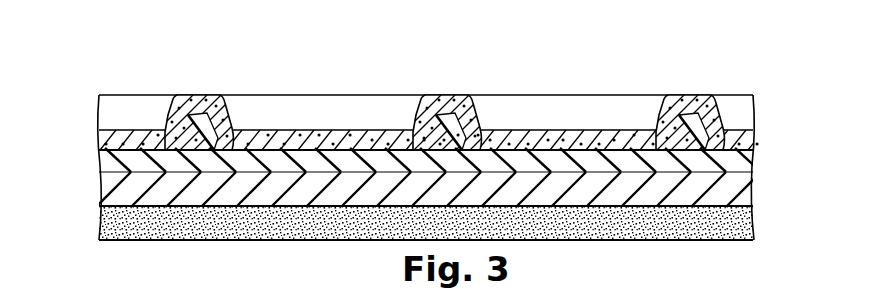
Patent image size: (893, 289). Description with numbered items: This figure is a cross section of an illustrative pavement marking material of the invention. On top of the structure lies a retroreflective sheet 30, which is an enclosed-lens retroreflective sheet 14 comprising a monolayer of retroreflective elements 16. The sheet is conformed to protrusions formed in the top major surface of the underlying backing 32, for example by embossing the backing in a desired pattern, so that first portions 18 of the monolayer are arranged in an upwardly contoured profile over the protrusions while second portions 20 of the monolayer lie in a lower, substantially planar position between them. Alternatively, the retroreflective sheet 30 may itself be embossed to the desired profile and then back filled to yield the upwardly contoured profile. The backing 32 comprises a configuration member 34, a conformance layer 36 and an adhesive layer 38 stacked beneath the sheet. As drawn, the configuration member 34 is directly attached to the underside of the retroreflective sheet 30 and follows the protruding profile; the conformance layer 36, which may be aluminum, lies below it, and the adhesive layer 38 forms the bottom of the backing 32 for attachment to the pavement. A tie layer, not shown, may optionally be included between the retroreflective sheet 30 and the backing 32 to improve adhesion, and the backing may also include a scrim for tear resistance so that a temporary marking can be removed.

The enclosed-lens retroreflective sheet 14 is at (97, 150).
The retroreflective elements 16 is at (152, 140).
The first portions 18 is at (203, 95).
The second portions 20 is at (330, 130).
The retroreflective sheet 30 is at (731, 127).
The backing 32 is at (760, 148).
The configuration member 34 is at (753, 140).
The conformance layer 36 is at (648, 194).
The adhesive layer 38 is at (578, 228).